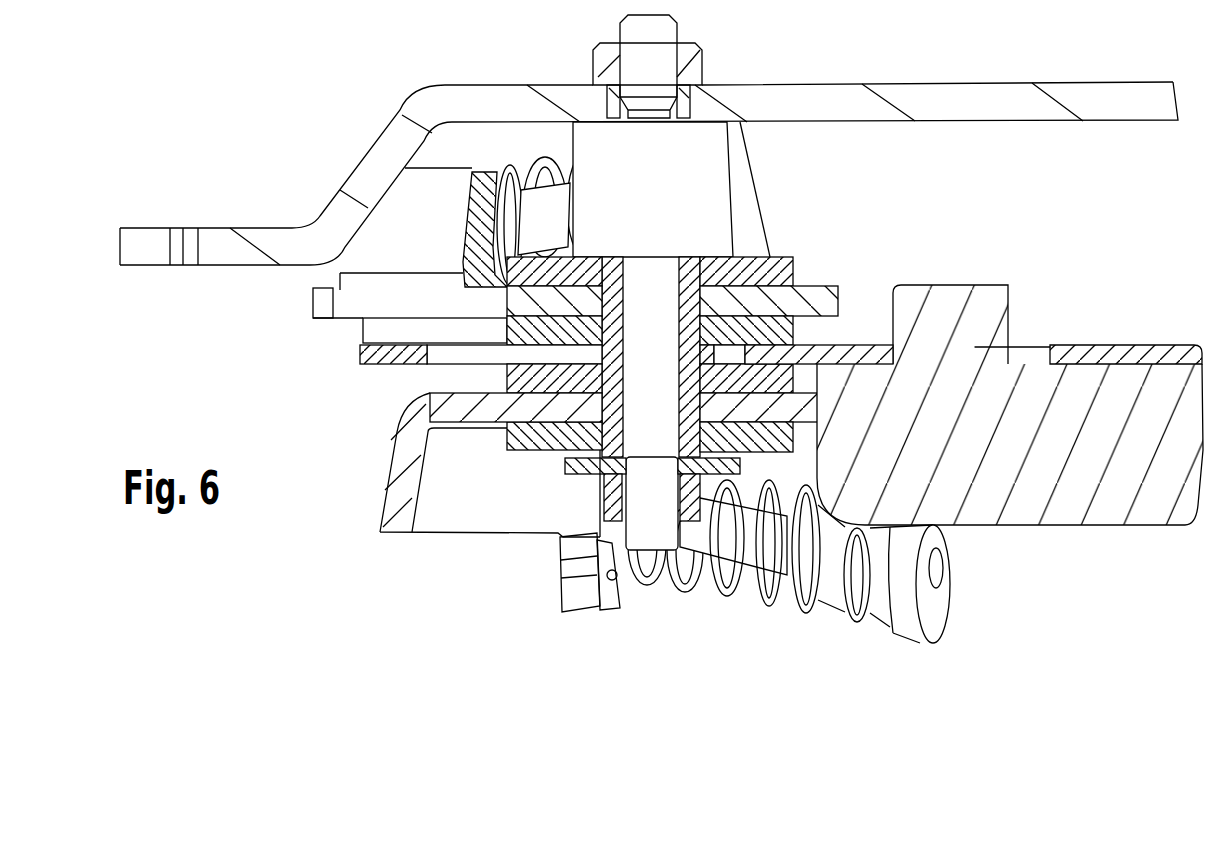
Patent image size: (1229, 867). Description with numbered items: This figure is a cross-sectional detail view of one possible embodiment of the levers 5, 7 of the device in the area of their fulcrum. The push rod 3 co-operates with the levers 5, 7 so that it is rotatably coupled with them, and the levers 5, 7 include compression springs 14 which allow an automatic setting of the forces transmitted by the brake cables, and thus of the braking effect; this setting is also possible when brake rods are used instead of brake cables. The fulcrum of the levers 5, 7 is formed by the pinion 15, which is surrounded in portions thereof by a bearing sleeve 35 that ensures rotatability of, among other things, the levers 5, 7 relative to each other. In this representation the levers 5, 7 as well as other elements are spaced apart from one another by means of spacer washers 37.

The push rod 3 is at (992, 395).
The lever 5 is at (350, 298).
The lever 7 is at (403, 447).
The compression spring 14 is at (540, 165).
The pinion 15 is at (675, 187).
The bearing sleeve 35 is at (598, 436).
The spacer washer 37 is at (527, 437).